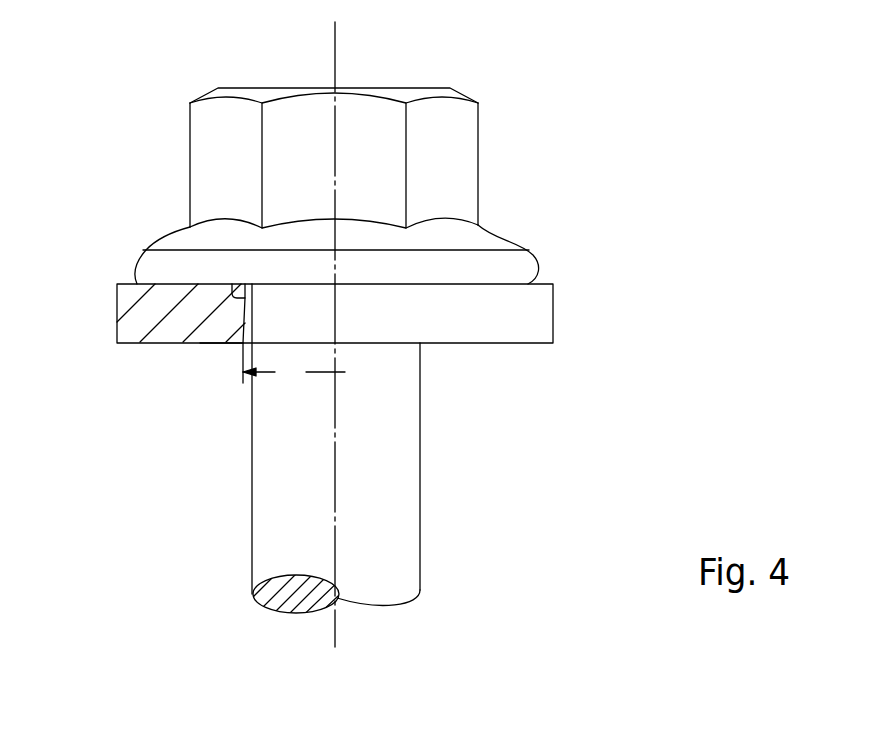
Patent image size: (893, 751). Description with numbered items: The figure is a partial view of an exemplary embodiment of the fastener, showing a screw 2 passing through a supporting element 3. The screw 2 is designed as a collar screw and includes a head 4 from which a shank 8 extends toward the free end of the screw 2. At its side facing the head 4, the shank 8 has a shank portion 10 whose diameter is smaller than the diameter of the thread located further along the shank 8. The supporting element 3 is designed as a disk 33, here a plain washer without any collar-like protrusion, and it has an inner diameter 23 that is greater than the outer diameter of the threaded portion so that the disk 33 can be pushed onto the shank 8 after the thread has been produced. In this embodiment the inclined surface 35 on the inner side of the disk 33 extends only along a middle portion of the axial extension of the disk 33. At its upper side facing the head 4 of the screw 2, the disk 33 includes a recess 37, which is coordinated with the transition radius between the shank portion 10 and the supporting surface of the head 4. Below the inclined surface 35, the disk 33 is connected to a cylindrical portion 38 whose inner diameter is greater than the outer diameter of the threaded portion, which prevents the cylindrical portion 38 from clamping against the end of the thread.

The screw 2 is at (449, 458).
The supporting element 3 is at (556, 317).
The head 4 is at (478, 203).
The shank 8 is at (449, 458).
The shank portion 10 is at (393, 500).
The inner diameter 23 is at (294, 366).
The disk 33 is at (153, 306).
The inclined surface 35 is at (243, 311).
The recess 37 is at (232, 284).
The cylindrical portion 38 is at (240, 332).